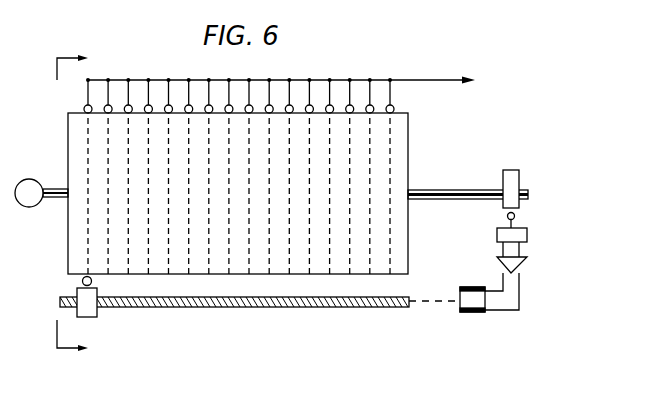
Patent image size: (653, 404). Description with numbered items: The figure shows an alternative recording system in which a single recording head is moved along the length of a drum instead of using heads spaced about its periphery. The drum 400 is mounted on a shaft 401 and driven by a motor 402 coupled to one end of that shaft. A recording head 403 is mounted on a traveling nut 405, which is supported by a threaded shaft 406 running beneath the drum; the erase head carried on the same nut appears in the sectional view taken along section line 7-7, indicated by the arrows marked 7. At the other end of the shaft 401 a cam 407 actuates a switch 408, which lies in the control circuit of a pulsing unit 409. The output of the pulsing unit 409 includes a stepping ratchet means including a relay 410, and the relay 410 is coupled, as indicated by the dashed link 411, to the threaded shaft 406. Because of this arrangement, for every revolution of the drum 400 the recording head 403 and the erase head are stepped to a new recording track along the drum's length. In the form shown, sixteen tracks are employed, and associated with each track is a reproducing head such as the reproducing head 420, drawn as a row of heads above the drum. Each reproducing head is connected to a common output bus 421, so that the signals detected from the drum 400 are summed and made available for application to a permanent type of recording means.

The section line 7- 7 is at (72, 205).
The drum 400 is at (400, 152).
The shaft 401 is at (57, 200).
The motor 402 is at (40, 167).
The recording head 403 is at (92, 281).
The traveling nut 405 is at (85, 310).
The threaded shaft 406 is at (306, 306).
The cam 407 is at (518, 177).
The switch 408 is at (497, 237).
The pulsing unit 409 is at (503, 263).
The relay 410 is at (470, 313).
The dashed link 411 is at (450, 303).
The reproducing head 420 is at (85, 107).
The output bus 421 is at (404, 79).